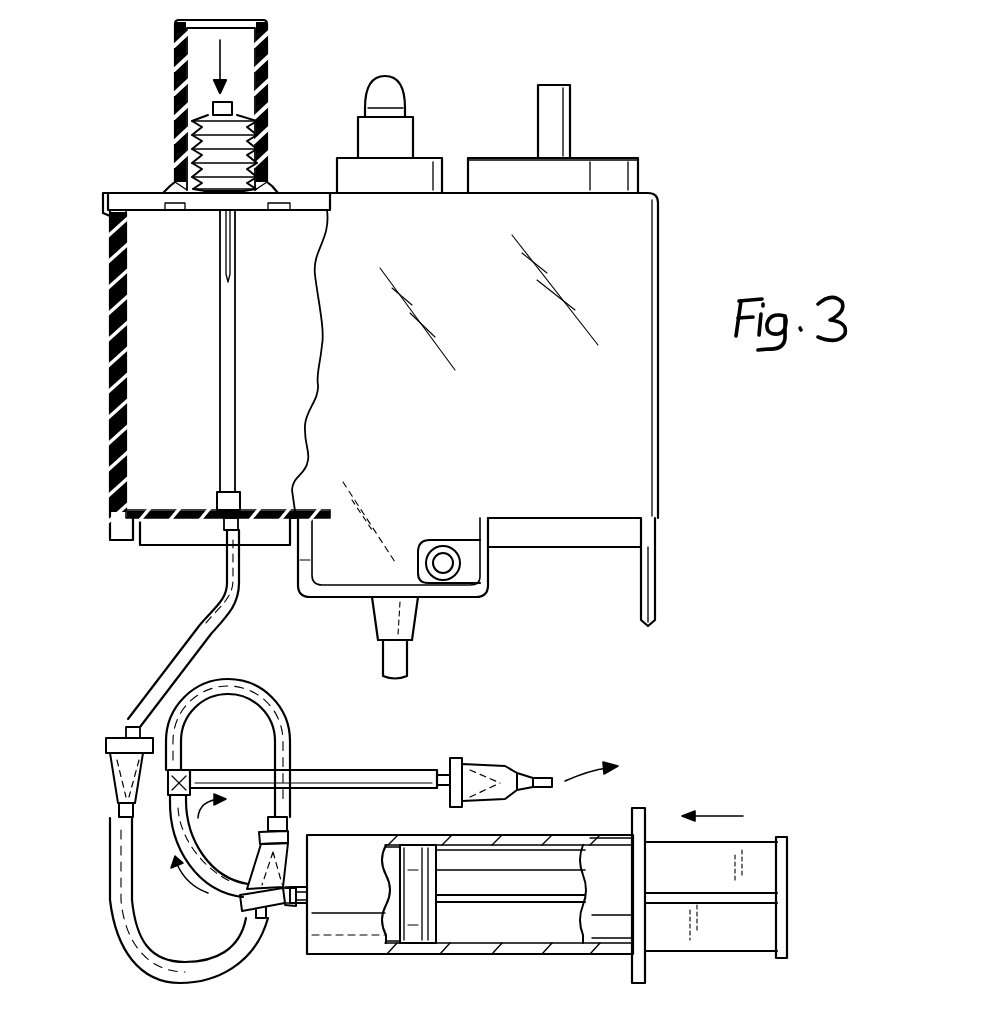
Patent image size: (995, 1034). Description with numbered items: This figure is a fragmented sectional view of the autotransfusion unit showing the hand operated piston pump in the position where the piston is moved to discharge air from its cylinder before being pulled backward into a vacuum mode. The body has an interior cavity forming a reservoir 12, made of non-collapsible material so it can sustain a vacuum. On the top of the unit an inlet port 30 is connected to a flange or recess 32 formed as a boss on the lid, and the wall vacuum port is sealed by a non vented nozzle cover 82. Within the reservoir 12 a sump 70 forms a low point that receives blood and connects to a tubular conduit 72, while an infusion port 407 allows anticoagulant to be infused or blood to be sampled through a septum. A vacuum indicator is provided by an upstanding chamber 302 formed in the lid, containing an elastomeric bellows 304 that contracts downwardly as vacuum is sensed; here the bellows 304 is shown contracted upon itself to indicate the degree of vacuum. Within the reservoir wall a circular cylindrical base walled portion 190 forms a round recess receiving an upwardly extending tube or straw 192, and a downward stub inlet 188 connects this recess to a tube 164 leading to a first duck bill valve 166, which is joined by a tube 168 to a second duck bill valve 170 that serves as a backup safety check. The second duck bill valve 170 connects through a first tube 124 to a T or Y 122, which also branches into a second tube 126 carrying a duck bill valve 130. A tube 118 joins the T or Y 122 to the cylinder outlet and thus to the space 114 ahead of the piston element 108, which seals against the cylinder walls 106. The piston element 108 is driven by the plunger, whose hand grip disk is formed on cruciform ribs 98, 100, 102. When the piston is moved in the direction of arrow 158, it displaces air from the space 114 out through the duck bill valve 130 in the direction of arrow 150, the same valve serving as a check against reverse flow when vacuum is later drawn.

The upstanding chamber 302 is at (192, 22).
The bellows 304 is at (247, 133).
The non vented nozzle cover 82 is at (403, 92).
The inlet port 30 is at (570, 107).
The flange or recess 32 is at (618, 158).
The reservoir 12 is at (122, 432).
The tube or straw 192 is at (237, 390).
The circular cylindrical base walled portion 190 is at (245, 500).
The inlet 188 is at (225, 525).
The tube 164 is at (232, 592).
The sump 70 is at (348, 598).
The tubular conduit 72 is at (413, 652).
The infusion port 407 is at (453, 563).
The first duck bill valve 166 is at (105, 777).
The first tube 124 is at (277, 693).
The T or Y 122 is at (183, 777).
The first tube 118 is at (183, 838).
The second duck bill valve 170 is at (290, 842).
The tube 168 is at (183, 972).
The second tube 126 is at (352, 772).
The duck bill valve 130 is at (493, 768).
The arrow 150 is at (626, 762).
The arrow 158 is at (715, 815).
The cylinder walls 106 is at (557, 955).
The piston element 108 is at (415, 935).
The space 114 is at (390, 920).
The cruciform rib 100 is at (740, 903).
The cruciform rib 102 is at (722, 935).
The cruciform rib 98 is at (748, 857).